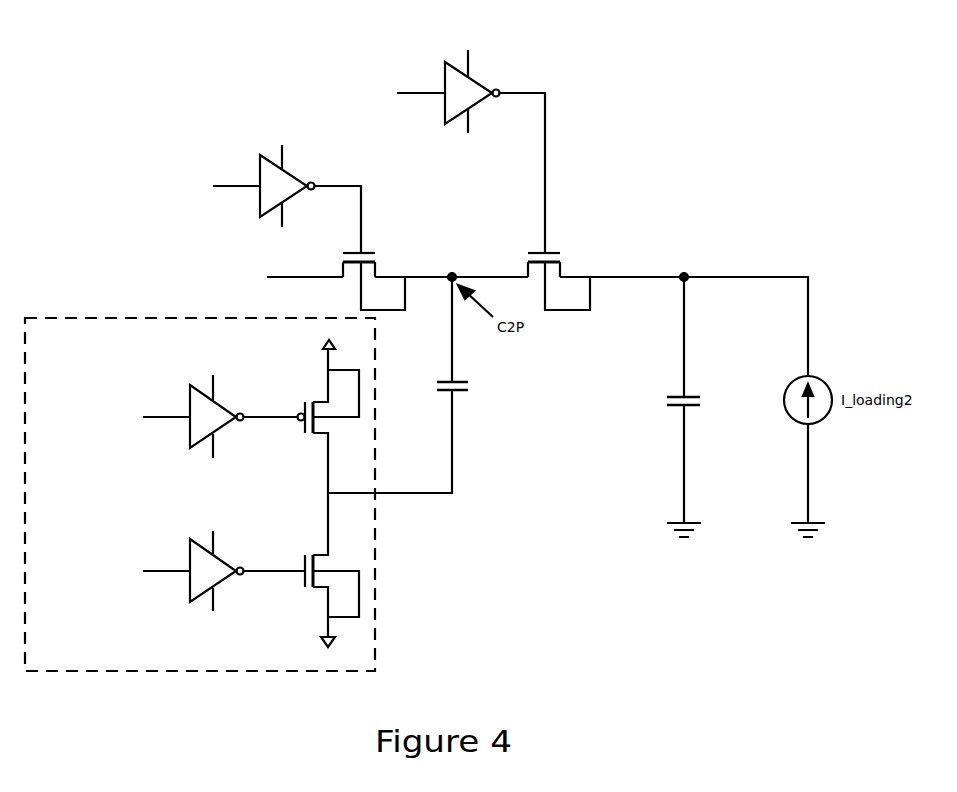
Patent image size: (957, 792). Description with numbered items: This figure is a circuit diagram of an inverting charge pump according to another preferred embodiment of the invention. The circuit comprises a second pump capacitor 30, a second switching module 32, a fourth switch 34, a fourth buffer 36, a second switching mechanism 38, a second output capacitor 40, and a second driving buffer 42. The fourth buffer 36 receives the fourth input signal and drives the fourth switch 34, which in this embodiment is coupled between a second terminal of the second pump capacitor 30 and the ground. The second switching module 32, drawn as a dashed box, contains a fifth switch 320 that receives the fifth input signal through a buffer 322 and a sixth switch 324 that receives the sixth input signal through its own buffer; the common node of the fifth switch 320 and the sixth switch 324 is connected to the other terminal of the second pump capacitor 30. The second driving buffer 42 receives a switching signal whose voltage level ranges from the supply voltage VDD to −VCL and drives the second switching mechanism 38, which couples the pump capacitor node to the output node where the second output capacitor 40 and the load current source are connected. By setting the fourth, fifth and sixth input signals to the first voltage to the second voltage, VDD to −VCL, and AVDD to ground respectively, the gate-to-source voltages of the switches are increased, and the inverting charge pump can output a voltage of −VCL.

The second pump capacitor 30 is at (468, 385).
The second switching module 32 is at (375, 657).
The fourth switch 34 is at (375, 270).
The fourth buffer 36 is at (297, 178).
The second switching mechanism 38 is at (560, 272).
The second output capacitor 40 is at (700, 395).
The second driving buffer 42 is at (483, 85).
The fifth switch 320 is at (362, 385).
The buffer 322 is at (245, 393).
The sixth switch 324 is at (245, 548).